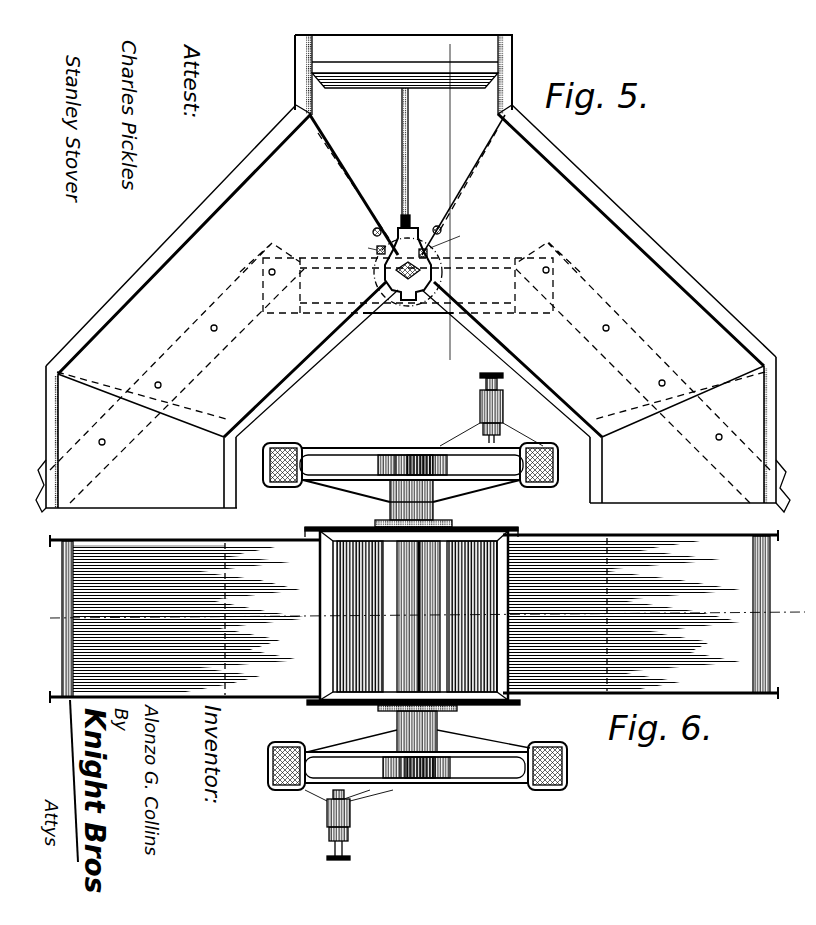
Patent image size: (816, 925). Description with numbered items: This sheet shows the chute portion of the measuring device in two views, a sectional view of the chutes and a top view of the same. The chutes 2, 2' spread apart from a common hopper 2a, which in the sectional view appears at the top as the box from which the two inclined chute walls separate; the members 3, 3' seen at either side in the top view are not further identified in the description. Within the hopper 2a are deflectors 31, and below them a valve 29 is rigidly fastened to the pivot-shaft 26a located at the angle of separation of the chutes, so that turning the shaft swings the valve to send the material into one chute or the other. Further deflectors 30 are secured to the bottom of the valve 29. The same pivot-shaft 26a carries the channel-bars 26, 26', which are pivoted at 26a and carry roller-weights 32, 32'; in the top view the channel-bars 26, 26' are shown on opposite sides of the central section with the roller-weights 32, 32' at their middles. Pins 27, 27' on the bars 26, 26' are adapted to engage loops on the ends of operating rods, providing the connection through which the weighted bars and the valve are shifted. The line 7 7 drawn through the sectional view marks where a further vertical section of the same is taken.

In FIG. 5, the hopper section 2 is at (170, 377).
In FIG. 6, the hopper section 2 is at (166, 617).
In FIG. 5, the hopper section 2' is at (652, 377).
In FIG. 5, the hopper 2a is at (403, 75).
In FIG. 6, the rack 3 is at (182, 619).
In FIG. 6, the rack 3' is at (651, 614).
In FIG. 5, the section line 7 is at (449, 210).
In FIG. 5, the channel-bar 26 is at (408, 285).
In FIG. 6, the channel-bar 26 is at (417, 776).
In FIG. 6, the channel-bar 26' is at (410, 454).
In FIG. 5, the pivot-shaft 26a is at (399, 293).
In FIG. 6, the pin 27 is at (349, 825).
In FIG. 6, the pin 27' is at (491, 409).
In FIG. 5, the valve 29 is at (420, 158).
In FIG. 6, the valve 29 is at (380, 703).
In FIG. 5, the deflectors 30 is at (408, 239).
In FIG. 6, the deflectors 30 is at (417, 616).
In FIG. 5, the deflectors 31 is at (470, 80).
In FIG. 6, the deflectors 31 is at (520, 533).
In FIG. 6, the roller-weight 32 is at (414, 789).
In FIG. 6, the roller-weight 32' is at (412, 447).